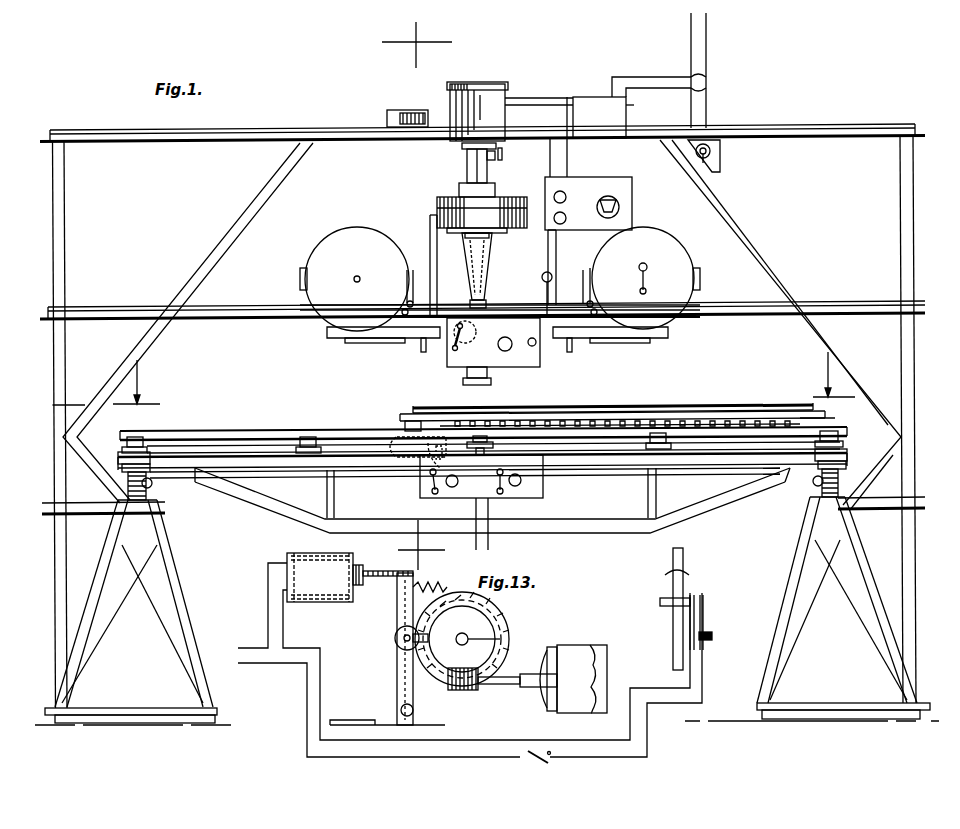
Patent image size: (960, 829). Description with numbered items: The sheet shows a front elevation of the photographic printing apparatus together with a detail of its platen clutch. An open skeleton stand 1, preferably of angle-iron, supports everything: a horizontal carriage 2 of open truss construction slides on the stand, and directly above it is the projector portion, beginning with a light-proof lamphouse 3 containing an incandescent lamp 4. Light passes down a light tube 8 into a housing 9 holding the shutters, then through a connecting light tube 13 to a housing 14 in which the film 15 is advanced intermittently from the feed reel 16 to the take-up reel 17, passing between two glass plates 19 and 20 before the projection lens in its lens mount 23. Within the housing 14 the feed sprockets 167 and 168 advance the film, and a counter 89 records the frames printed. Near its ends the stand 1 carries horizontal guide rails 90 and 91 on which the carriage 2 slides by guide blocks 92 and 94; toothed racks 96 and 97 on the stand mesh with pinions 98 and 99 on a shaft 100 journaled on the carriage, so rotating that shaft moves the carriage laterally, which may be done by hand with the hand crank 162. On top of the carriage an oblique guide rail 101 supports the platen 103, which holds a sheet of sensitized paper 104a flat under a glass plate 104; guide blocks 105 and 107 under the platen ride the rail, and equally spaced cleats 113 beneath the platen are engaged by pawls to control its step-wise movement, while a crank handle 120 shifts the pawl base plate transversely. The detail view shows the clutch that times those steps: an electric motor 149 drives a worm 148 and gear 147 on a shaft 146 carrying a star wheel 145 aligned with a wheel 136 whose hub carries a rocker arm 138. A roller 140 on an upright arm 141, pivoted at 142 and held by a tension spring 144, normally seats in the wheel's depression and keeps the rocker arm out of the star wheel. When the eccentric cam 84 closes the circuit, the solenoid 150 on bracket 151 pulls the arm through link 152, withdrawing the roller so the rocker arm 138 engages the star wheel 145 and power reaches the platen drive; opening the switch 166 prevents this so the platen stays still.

In FIG. 1, the stand 1 is at (912, 602).
In FIG. 1, the horizontal carriage 2 is at (718, 512).
In FIG. 1, the lamphouse 3 is at (505, 97).
In FIG. 1, the incandescent lamp 4 is at (484, 378).
In FIG. 1, the light tube 8 is at (490, 166).
In FIG. 1, the housing 9 is at (508, 212).
In FIG. 1, the connecting light tube 13 is at (490, 256).
In FIG. 1, the housing 14 is at (535, 353).
In FIG. 1, the film 15 is at (595, 325).
In FIG. 1, the feed reel 16 is at (378, 237).
In FIG. 1, the take-up reel 17 is at (671, 242).
In FIG. 1, the glass plate 19 is at (547, 300).
In FIG. 1, the glass plate 20 is at (570, 350).
In FIG. 1, the lens mount 23 is at (491, 376).
In FIG. 1, the counter 89 is at (408, 112).
In FIG. 1, the guide rail 90 is at (148, 500).
In FIG. 1, the guide rail 91 is at (822, 492).
In FIG. 1, the guide block 92 is at (152, 484).
In FIG. 1, the guide block 94 is at (812, 481).
In FIG. 1, the toothed rack 96 is at (128, 470).
In FIG. 1, the toothed rack 97 is at (845, 472).
In FIG. 1, the pinion 98 is at (128, 452).
In FIG. 1, the pinion 99 is at (843, 452).
In FIG. 1, the shaft 100 is at (330, 470).
In FIG. 1, the guide rail 101 is at (215, 432).
In FIG. 1, the platen 103 is at (402, 414).
In FIG. 1, the glass plate 104 is at (425, 408).
In FIG. 1, the sensitized paper 104a is at (668, 396).
In FIG. 1, the guide block 105 is at (404, 425).
In FIG. 1, the guide block 107 is at (822, 420).
In FIG. 1, the cleats 113 is at (720, 420).
In FIG. 1, the crank handle 120 is at (440, 496).
In FIG. 1, the hand crank 162 is at (540, 486).
In FIG. 1, the feed sprocket 167 is at (410, 283).
In FIG. 1, the feed sprocket 168 is at (588, 283).
In FIG. 13, the eccentric cam 84 is at (662, 602).
In FIG. 13, the wheel 136 is at (503, 686).
In FIG. 13, the rocker arm 138 is at (462, 637).
In FIG. 13, the roller 140 is at (397, 634).
In FIG. 13, the upright arm 141 is at (397, 668).
In FIG. 13, the pivot 142 is at (401, 708).
In FIG. 13, the tension spring 144 is at (424, 587).
In FIG. 13, the star wheel 145 is at (495, 617).
In FIG. 13, the shaft 146 is at (500, 636).
In FIG. 13, the gear 147 is at (515, 640).
In FIG. 13, the worm 148 is at (456, 690).
In FIG. 13, the electric motor 149 is at (582, 663).
In FIG. 13, the solenoid 150 is at (325, 577).
In FIG. 13, the bracket 151 is at (347, 605).
In FIG. 13, the link 152 is at (388, 574).
In FIG. 13, the switch 166 is at (525, 760).